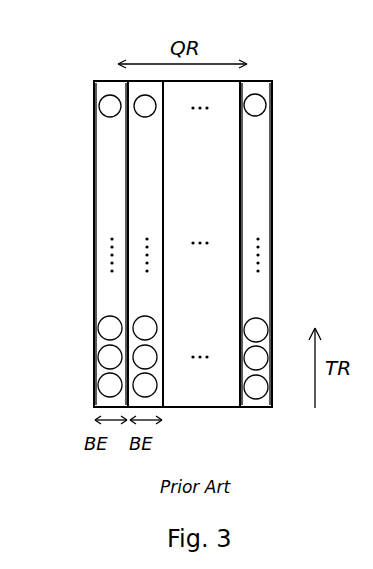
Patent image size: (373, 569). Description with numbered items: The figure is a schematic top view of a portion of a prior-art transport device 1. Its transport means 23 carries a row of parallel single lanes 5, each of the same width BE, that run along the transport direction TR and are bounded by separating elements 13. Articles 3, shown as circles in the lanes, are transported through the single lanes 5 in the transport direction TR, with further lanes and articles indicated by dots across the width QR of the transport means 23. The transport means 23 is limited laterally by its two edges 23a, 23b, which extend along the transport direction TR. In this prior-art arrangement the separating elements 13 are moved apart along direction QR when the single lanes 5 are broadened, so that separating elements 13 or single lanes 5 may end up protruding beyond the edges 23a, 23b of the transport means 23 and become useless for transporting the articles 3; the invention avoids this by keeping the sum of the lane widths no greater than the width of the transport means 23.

The transport device 1 is at (68, 109).
The articles 3 is at (110, 331).
The single lanes 5 is at (257, 185).
The separating elements 13 is at (165, 220).
The transport means 23 is at (192, 407).
The edge of the transport means 23a is at (94, 253).
The edge of the transport means 23b is at (272, 228).